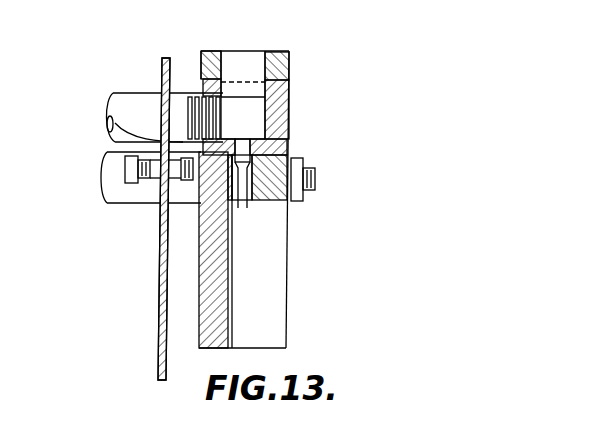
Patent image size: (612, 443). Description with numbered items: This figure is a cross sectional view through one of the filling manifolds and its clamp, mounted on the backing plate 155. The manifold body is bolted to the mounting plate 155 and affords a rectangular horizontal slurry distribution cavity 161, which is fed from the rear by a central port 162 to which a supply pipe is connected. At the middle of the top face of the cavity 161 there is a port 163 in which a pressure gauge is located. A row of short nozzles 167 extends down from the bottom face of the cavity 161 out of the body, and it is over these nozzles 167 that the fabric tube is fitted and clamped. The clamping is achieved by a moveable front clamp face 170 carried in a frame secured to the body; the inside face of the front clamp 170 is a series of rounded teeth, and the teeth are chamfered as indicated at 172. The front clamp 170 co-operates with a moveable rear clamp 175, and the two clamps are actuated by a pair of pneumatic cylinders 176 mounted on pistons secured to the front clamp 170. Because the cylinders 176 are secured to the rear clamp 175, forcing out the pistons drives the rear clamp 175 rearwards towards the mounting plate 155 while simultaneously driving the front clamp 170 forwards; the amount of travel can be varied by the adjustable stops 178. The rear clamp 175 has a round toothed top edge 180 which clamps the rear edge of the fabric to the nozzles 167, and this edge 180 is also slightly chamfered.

The backing plate 155 is at (162, 308).
The slurry distribution cavity 161 is at (257, 123).
The central port 162 is at (191, 103).
The port 163 is at (263, 56).
The nozzles 167 is at (254, 143).
The front clamp face 170 is at (283, 207).
The chamfered teeth 172 is at (247, 207).
The rear clamp 175 is at (200, 243).
The pneumatic cylinders 176 is at (133, 205).
The adjustable stops 178 is at (128, 172).
The round toothed top edge 180 is at (107, 126).